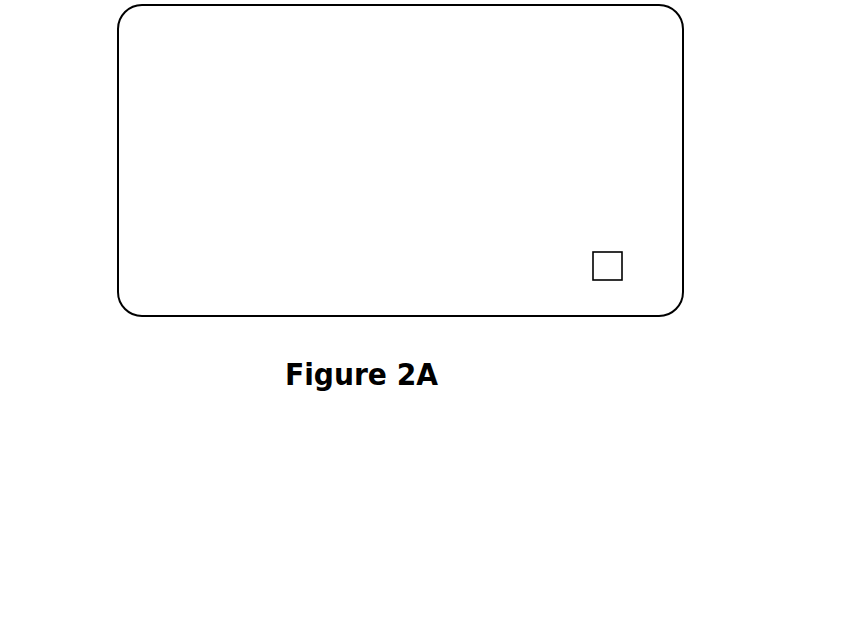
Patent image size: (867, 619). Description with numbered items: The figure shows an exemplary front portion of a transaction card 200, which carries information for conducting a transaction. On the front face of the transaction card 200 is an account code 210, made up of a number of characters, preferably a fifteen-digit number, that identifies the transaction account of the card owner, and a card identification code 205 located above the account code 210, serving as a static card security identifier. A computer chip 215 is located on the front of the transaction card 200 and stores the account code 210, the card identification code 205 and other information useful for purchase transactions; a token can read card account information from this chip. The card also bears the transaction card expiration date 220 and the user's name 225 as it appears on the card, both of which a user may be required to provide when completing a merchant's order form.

The transaction card 200 is at (570, 55).
The card identification code 205 is at (652, 127).
The account code 210 is at (653, 183).
The computer chip 215 is at (632, 265).
The transaction card expiration date 220 is at (147, 252).
The user's name 225 is at (147, 283).